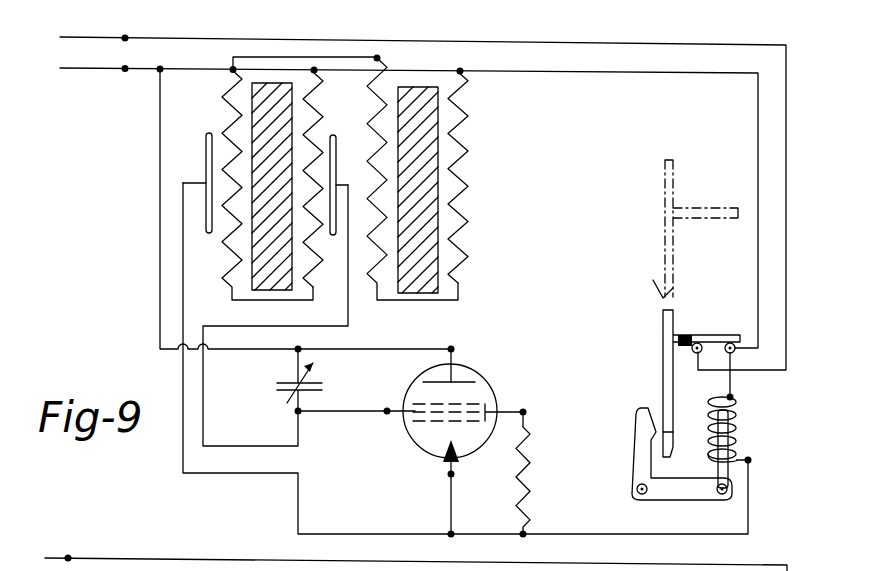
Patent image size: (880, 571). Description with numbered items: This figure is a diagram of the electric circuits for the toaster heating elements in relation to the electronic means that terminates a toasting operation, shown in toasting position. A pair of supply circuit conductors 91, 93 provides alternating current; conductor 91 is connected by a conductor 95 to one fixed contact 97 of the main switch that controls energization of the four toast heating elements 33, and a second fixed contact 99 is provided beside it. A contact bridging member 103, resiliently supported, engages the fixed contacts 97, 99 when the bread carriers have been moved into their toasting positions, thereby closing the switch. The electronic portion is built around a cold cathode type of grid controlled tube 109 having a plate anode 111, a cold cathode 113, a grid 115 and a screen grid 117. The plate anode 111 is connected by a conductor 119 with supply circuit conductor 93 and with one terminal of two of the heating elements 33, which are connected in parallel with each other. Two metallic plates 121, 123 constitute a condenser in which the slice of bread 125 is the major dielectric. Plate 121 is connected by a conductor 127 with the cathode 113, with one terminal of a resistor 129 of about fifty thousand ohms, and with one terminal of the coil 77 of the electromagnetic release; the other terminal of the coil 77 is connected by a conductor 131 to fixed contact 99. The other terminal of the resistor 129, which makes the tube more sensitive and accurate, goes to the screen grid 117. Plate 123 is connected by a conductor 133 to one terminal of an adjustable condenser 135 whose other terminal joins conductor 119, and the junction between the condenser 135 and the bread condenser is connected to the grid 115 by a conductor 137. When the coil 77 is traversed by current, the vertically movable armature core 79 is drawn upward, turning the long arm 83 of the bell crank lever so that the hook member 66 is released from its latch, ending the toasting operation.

The supply circuit conductor 91 is at (124, 38).
The supply circuit conductor 93 is at (86, 63).
The conductor 95 is at (571, 56).
The toast heating element 33 is at (222, 104).
The slice of bread 125 is at (270, 79).
The metallic plate 121 is at (206, 151).
The metallic plate 123 is at (336, 151).
The conductor 119 is at (158, 223).
The conductor 127 is at (184, 307).
The conductor 133 is at (350, 318).
The adjustable condenser 135 is at (272, 387).
The conductor 137 is at (341, 413).
The grid controlled tube 109 is at (493, 393).
The plate anode 111 is at (460, 383).
The screen grid 117 is at (483, 403).
The grid 115 is at (408, 415).
The cold cathode 113 is at (443, 453).
The resistor 129 is at (531, 448).
The contact bridging member 103 is at (709, 335).
The fixed contact 97 is at (695, 353).
The fixed contact 99 is at (733, 353).
The conductor 131 is at (735, 397).
The coil 77 is at (737, 452).
The armature core 79 is at (730, 470).
The long arm 83 is at (672, 500).
The hook member 66 is at (665, 457).